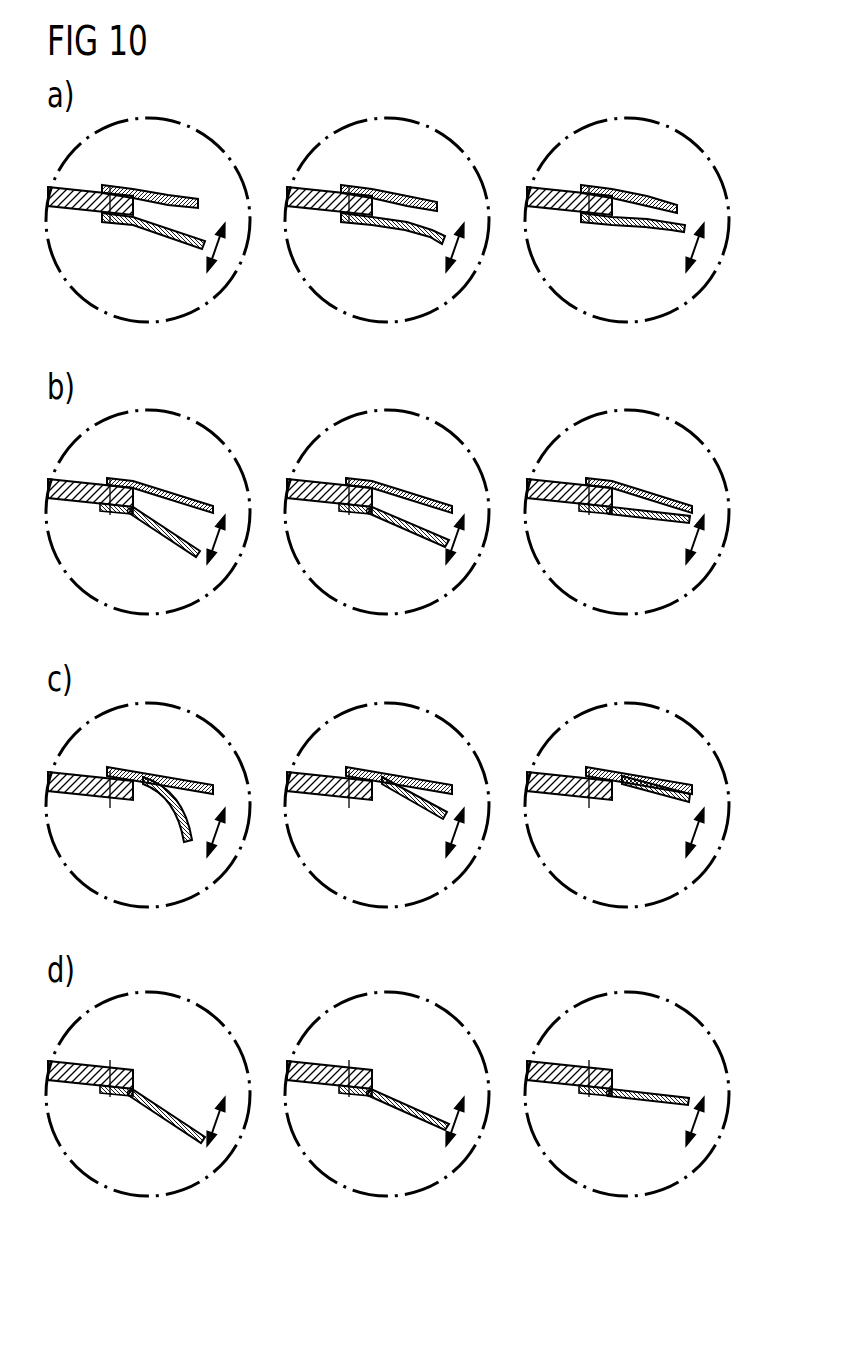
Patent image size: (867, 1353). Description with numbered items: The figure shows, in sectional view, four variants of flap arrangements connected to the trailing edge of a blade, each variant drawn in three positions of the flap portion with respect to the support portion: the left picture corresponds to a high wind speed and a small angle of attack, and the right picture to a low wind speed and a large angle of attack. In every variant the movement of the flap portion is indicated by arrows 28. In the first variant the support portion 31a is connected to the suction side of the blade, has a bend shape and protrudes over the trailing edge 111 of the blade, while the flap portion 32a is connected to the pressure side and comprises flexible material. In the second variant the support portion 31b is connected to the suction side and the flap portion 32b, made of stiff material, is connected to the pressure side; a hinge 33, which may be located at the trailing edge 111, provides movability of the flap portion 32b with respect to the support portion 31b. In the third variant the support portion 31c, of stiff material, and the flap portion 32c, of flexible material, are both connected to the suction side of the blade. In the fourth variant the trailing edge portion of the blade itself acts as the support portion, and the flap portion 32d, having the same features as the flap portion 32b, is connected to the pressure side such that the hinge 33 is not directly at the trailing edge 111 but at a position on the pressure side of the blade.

The arrows 28 is at (237, 264).
The support portion 31a is at (150, 175).
The flap portion 32a is at (153, 254).
The support portion 31b is at (160, 477).
The flap portion 32b is at (159, 551).
The hinge 33 is at (111, 537).
The support portion 31c is at (160, 758).
The flap portion 32c is at (152, 819).
The trailing edge 111 is at (126, 1076).
The flap portion 32d is at (166, 1133).